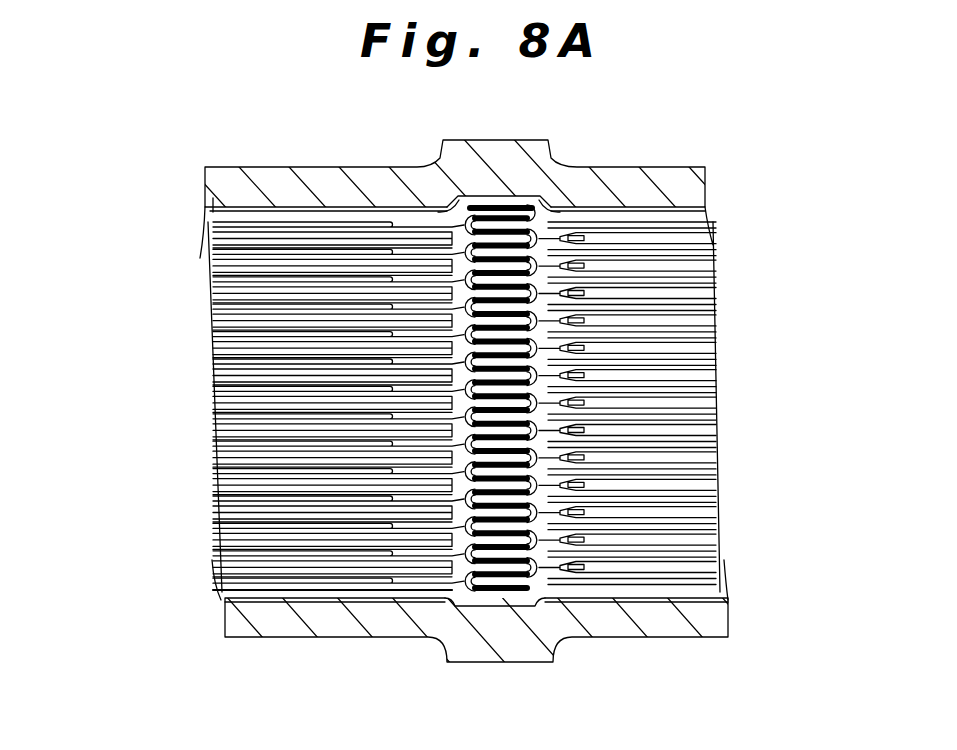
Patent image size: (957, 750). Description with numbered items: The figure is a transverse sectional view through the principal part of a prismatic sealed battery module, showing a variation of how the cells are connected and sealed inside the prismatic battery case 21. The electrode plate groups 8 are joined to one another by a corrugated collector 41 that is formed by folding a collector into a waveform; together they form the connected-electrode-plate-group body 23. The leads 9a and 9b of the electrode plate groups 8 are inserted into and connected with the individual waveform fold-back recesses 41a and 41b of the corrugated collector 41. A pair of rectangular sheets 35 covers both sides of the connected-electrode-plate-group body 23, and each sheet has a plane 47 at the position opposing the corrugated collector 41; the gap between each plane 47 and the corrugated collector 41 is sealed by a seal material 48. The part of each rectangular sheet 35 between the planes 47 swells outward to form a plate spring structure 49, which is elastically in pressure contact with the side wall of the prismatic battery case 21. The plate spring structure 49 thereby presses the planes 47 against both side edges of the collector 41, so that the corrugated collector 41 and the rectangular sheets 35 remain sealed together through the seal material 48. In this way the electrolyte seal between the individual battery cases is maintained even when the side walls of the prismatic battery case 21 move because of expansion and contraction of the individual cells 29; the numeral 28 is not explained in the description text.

The electrode plate group 8 is at (213, 408).
The lead 9a is at (460, 605).
The lead 9b is at (537, 552).
The prismatic battery case 21 is at (508, 170).
The connected-electrode-plate-group body 23 is at (192, 352).
The base plate 28 is at (290, 598).
The individual cell 29 is at (210, 588).
The rectangular sheet 35 is at (553, 203).
The corrugated collector 41 is at (547, 213).
The waveform fold-back recess 41a is at (463, 543).
The waveform fold-back recess 41b is at (563, 560).
The plane 47 is at (490, 203).
The seal material 48 is at (473, 197).
The plate spring structure 49 is at (367, 206).